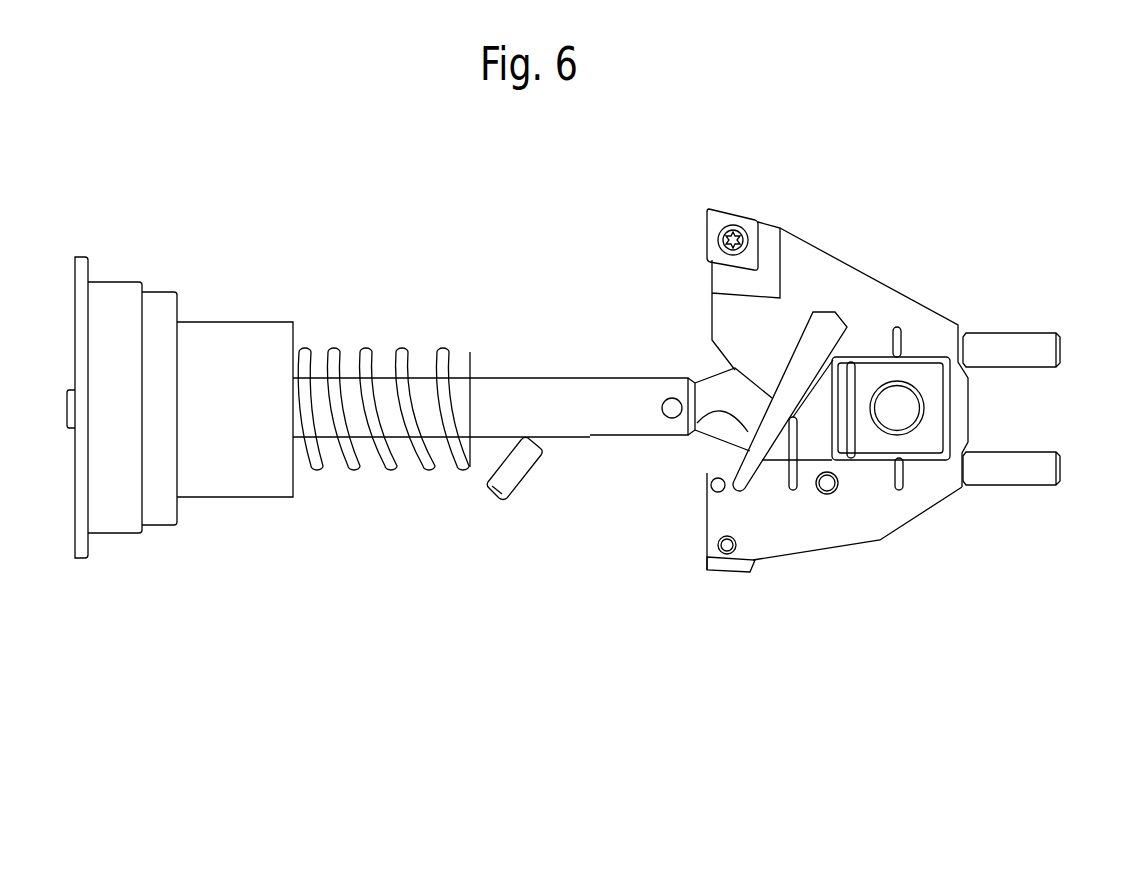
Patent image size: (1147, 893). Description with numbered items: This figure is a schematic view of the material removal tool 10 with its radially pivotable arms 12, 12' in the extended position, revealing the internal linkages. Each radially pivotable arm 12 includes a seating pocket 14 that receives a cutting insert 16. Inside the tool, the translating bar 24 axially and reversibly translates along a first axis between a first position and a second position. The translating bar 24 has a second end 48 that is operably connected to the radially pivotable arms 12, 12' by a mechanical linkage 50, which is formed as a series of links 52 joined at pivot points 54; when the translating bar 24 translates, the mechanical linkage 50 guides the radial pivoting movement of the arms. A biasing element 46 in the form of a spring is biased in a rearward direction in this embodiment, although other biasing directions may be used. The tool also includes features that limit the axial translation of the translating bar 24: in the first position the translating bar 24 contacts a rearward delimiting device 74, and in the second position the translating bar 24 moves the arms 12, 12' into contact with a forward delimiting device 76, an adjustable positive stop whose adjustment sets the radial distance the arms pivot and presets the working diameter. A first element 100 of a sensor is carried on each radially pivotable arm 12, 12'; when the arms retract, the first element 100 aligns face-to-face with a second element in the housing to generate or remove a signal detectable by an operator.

The material removal tool 10 is at (828, 172).
The radially pivotable arm 12 is at (850, 359).
The radially pivotable arm 12' is at (836, 522).
The seating pocket 14 is at (770, 233).
The cutting insert 16 is at (715, 211).
The translating bar 24 is at (553, 383).
The biasing element 46 is at (372, 353).
The second end 48 is at (625, 413).
The mechanical linkage 50 is at (700, 345).
The link 52 is at (733, 390).
The pivot point 54 is at (675, 398).
The rearward delimiting device 74 is at (493, 489).
The forward delimiting device 76 is at (1080, 355).
The first element 100 is at (712, 489).